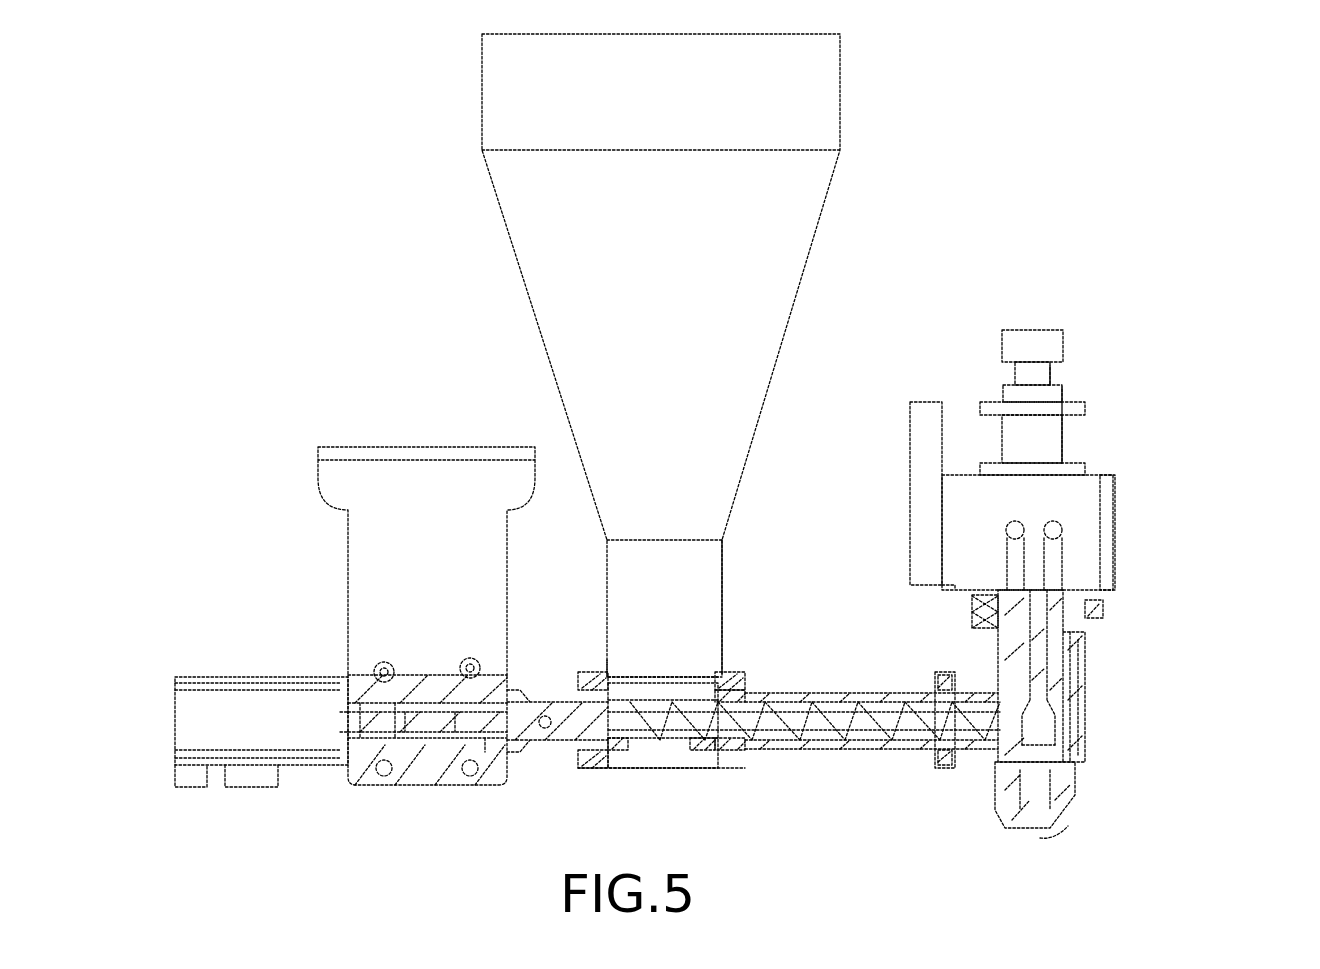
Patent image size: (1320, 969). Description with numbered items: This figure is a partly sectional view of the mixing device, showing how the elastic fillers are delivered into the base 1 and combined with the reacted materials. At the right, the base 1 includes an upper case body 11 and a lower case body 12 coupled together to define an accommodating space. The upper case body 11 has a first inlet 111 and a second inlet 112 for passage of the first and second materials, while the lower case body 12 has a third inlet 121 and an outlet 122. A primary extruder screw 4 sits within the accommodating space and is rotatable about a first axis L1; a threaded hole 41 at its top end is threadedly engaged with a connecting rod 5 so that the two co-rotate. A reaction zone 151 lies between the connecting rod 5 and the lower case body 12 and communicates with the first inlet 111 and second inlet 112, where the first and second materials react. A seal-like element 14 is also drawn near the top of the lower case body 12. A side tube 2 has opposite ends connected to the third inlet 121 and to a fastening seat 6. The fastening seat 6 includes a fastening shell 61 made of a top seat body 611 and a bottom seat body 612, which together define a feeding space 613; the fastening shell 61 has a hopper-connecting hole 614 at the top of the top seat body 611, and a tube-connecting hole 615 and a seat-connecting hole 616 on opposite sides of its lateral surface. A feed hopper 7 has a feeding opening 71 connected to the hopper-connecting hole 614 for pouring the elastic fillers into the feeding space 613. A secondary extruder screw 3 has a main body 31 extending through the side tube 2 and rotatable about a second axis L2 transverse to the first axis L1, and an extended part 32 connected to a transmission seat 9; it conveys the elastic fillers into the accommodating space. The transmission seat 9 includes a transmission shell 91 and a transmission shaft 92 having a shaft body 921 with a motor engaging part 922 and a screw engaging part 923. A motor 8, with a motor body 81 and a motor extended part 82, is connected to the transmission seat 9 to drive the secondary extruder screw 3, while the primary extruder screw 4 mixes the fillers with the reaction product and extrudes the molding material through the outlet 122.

The base 1 is at (1182, 688).
The side tube 2 is at (932, 752).
The secondary extruder screw 3 is at (804, 766).
The main body 31 is at (880, 733).
The secondary extruder screw extended part 32 is at (450, 735).
The primary extruder screw 4 is at (1078, 800).
The threaded hole 41 is at (1085, 745).
The connecting rod 5 is at (1082, 652).
The fastening seat 6 is at (661, 771).
The fastening shell 61 is at (670, 776).
The top seat body 611 is at (748, 688).
The bottom seat body 612 is at (615, 752).
The feeding space 613 is at (695, 755).
The hopper-connecting hole 614 is at (660, 678).
The tube-connecting hole 615 is at (725, 745).
The seat-connecting hole 616 is at (590, 760).
The feed hopper 7 is at (838, 197).
The feeding opening 71 is at (624, 662).
The motor 8 is at (213, 840).
The motor body 81 is at (275, 745).
The motor extended part 82 is at (385, 722).
The transmission seat 9 is at (207, 533).
The transmission shell 91 is at (440, 690).
The transmission shaft 92 is at (334, 659).
The shaft body 921 is at (435, 720).
The motor engaging part 922 is at (387, 695).
The screw engaging part 923 is at (503, 752).
The upper case body 11 is at (1100, 467).
The first inlet 111 is at (1062, 528).
The second inlet 112 is at (1005, 527).
The lower case body 12 is at (1085, 697).
The third inlet 121 is at (945, 700).
The outlet 122 is at (1070, 835).
The seal 14 is at (1095, 612).
The reaction zone 151 is at (1080, 660).
The first axis L1 is at (1035, 590).
The second axis L2 is at (175, 721).